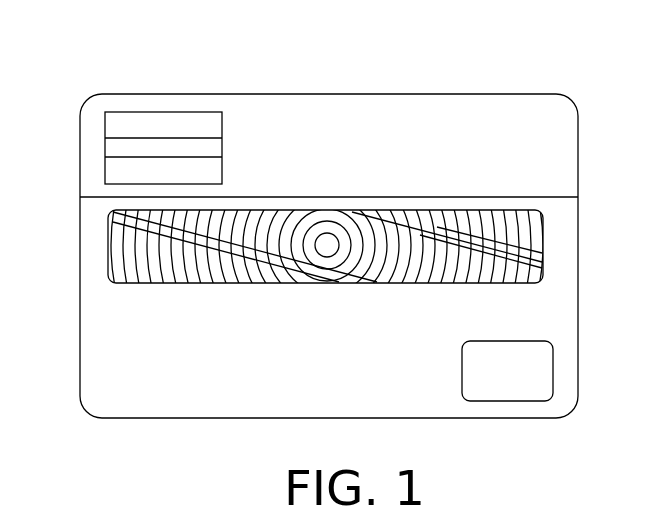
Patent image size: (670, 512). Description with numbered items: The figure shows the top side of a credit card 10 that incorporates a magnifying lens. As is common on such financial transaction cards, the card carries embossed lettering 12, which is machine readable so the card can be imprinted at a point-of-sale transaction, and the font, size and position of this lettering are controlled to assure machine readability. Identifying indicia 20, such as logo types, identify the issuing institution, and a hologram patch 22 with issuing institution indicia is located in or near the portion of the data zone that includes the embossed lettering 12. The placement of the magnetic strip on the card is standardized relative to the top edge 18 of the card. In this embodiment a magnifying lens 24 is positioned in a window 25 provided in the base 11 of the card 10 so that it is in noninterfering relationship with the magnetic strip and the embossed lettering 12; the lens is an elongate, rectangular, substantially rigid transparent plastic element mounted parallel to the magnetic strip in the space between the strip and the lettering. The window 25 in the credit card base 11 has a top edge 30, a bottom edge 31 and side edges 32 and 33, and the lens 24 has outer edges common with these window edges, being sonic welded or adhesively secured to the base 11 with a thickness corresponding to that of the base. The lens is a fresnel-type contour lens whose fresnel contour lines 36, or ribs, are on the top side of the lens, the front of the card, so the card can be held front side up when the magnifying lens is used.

The credit card 10 is at (552, 78).
The credit card base 11 is at (93, 314).
The embossed lettering 12 is at (366, 389).
The top edge 18 is at (452, 94).
The identifying indicia 20 is at (146, 108).
The hologram patch 22 is at (534, 381).
The magnifying lens 24 is at (530, 238).
The window 25 is at (100, 224).
The top edge of window 30 is at (478, 210).
The bottom edge of window 31 is at (505, 283).
The side edge of window 32 is at (107, 257).
The side edge of window 33 is at (540, 262).
The fresnel contour lines 36 is at (500, 227).